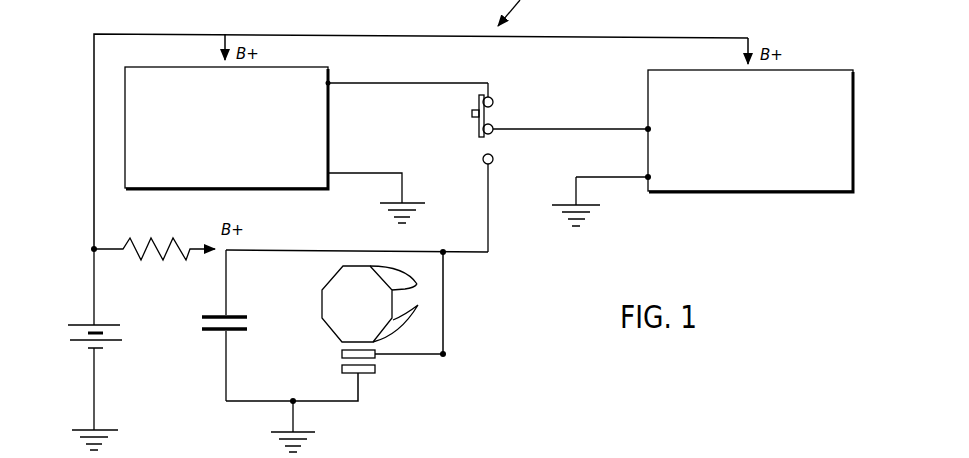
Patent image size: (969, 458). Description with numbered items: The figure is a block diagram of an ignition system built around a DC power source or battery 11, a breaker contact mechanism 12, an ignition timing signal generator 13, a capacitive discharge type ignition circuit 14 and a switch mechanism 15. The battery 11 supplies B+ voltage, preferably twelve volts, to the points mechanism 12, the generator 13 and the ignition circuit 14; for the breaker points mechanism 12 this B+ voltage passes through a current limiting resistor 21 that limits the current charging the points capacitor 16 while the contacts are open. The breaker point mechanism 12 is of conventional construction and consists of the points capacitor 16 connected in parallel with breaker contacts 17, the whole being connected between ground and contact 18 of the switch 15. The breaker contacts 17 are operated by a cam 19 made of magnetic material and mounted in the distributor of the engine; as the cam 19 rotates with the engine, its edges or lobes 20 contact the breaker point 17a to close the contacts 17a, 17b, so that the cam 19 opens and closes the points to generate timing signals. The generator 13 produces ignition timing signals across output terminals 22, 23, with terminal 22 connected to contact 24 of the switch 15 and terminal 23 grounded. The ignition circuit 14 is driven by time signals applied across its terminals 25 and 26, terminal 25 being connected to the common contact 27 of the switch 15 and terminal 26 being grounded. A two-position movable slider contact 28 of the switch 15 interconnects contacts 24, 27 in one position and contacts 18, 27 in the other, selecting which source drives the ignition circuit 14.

The battery 11 is at (84, 325).
The breaker contact mechanism 12 is at (287, 364).
The ignition timing signal generator 13 is at (303, 67).
The capacitive discharge type ignition circuit 14 is at (810, 70).
The switch mechanism 15 is at (503, 112).
The points capacitor 16 is at (222, 316).
The breaker contacts 17 is at (372, 373).
The breaker point 17a is at (342, 352).
The breaker point 17b is at (342, 369).
The switch contact 18 is at (492, 163).
The cam 19 is at (357, 304).
The lobes 20 is at (403, 304).
The current limiting resistor 21 is at (150, 240).
The output terminal 22 is at (330, 84).
The output terminal 23 is at (330, 173).
The switch contact 24 is at (492, 98).
The terminal 25 is at (648, 128).
The terminal 26 is at (646, 132).
The common contact 27 is at (493, 133).
The movable slider contact 28 is at (472, 111).